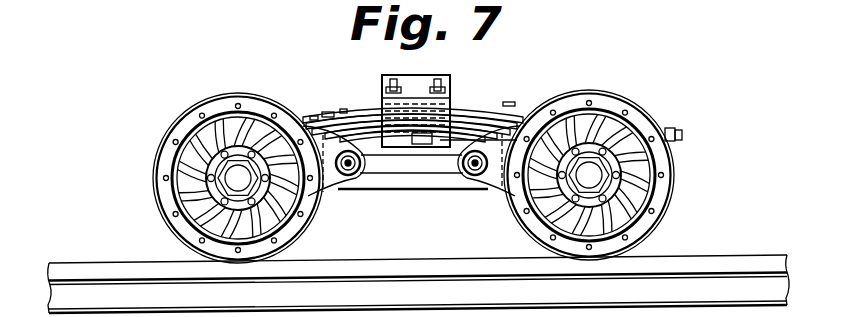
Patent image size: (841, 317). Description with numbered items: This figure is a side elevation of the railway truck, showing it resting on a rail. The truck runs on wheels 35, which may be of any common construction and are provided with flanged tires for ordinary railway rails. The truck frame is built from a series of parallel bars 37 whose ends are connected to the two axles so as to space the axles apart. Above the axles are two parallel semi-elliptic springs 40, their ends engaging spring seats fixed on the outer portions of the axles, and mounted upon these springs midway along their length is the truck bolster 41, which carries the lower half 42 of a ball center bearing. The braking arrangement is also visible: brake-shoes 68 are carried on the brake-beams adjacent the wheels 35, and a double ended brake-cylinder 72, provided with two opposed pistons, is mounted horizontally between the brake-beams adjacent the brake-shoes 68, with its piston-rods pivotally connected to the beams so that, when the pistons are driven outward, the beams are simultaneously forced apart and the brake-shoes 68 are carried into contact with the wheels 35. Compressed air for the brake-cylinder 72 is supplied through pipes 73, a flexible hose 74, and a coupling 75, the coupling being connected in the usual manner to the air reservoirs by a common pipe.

The wheels 35 is at (165, 171).
The parallel bars 37 is at (376, 189).
The semi-elliptic springs 40 is at (329, 112).
The truck bolster 41 is at (395, 125).
The lower half of ball center bearing 42 is at (463, 128).
The brake-shoes 68 is at (332, 198).
The double ended brake-cylinders 72 is at (423, 167).
The pipes 73 is at (468, 132).
The flexible hose 74 is at (668, 126).
The coupling 75 is at (678, 128).